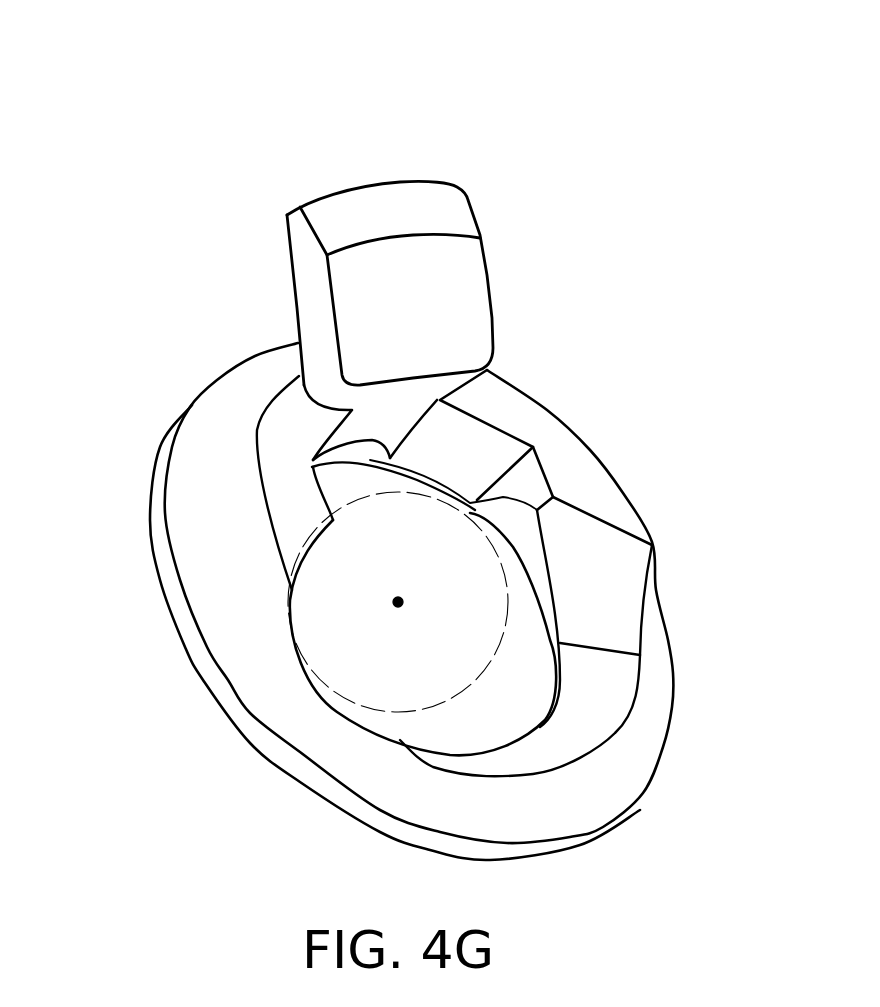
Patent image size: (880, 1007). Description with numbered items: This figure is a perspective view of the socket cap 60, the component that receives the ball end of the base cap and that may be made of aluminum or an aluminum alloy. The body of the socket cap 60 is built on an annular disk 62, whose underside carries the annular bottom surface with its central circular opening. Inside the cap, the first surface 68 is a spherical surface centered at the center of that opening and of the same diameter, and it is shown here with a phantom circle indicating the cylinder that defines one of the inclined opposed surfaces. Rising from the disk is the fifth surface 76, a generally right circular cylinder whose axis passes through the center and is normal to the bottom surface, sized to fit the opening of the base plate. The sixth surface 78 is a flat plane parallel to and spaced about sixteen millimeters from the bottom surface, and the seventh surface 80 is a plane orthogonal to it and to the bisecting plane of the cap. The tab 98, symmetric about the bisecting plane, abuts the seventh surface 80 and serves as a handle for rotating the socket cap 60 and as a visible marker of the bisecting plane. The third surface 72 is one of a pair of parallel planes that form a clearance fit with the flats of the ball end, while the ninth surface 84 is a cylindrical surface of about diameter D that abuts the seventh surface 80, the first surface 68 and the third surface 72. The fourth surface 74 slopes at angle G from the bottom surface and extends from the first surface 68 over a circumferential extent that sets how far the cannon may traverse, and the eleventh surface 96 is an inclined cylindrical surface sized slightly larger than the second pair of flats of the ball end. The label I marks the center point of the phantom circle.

The socket cap 60 is at (118, 153).
The annular disk 62 is at (640, 757).
The first surface 68 is at (362, 456).
The third surface 72 is at (527, 473).
The fourth surface 74 is at (572, 728).
The fifth surface 76 is at (270, 403).
The sixth surface 78 is at (543, 417).
The seventh surface 80 is at (397, 393).
The ninth surface 84 is at (455, 468).
The eleventh surface 96 is at (620, 597).
The tab 98 is at (410, 197).
The center axis I is at (404, 606).